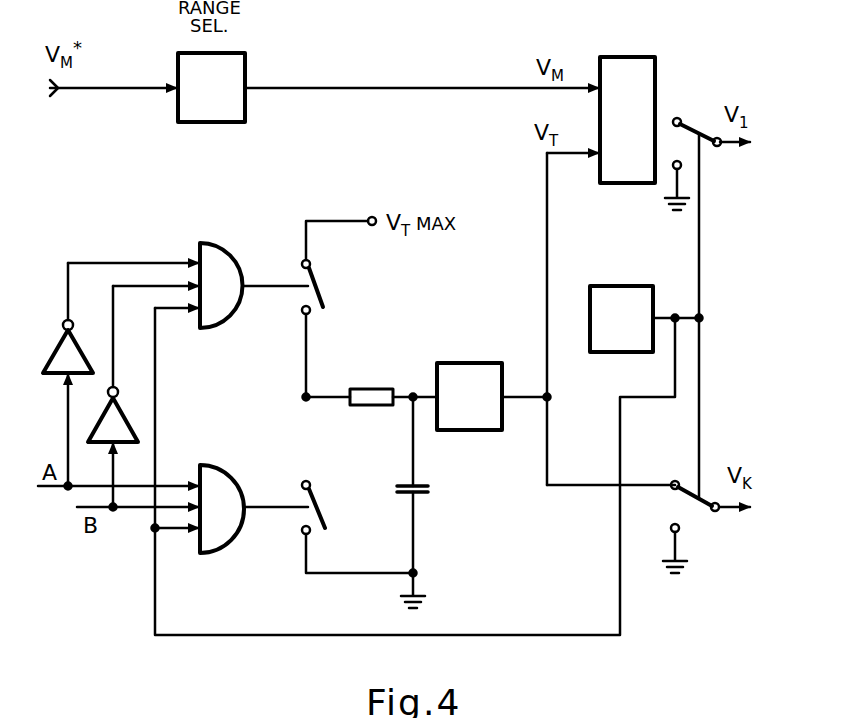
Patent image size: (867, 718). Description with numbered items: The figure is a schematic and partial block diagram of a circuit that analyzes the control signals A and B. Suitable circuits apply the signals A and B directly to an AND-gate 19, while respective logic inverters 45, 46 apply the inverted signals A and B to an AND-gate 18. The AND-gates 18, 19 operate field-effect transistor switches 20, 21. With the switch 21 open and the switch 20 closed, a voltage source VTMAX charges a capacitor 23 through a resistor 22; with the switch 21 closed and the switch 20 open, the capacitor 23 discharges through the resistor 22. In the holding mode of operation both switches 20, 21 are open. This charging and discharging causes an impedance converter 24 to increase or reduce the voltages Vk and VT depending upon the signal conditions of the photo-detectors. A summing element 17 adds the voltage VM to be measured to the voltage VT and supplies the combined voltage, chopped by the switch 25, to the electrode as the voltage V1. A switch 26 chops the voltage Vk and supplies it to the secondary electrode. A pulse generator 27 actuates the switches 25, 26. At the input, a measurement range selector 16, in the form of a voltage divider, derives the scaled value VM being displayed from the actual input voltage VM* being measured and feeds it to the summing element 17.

The measurement range selector 16 is at (246, 58).
The summing element 17 is at (657, 61).
The AND-gate 18 is at (228, 253).
The AND-gate 19 is at (226, 549).
The field-effect transistor switch 20 is at (319, 280).
The field-effect transistor switch 21 is at (318, 507).
The resistor 22 is at (373, 389).
The capacitor 23 is at (420, 494).
The impedance converter 24 is at (475, 362).
The switch 25 is at (694, 132).
The switch 26 is at (700, 511).
The pulse generator 27 is at (628, 285).
The logic inverter 45 is at (56, 378).
The logic inverter 46 is at (123, 446).